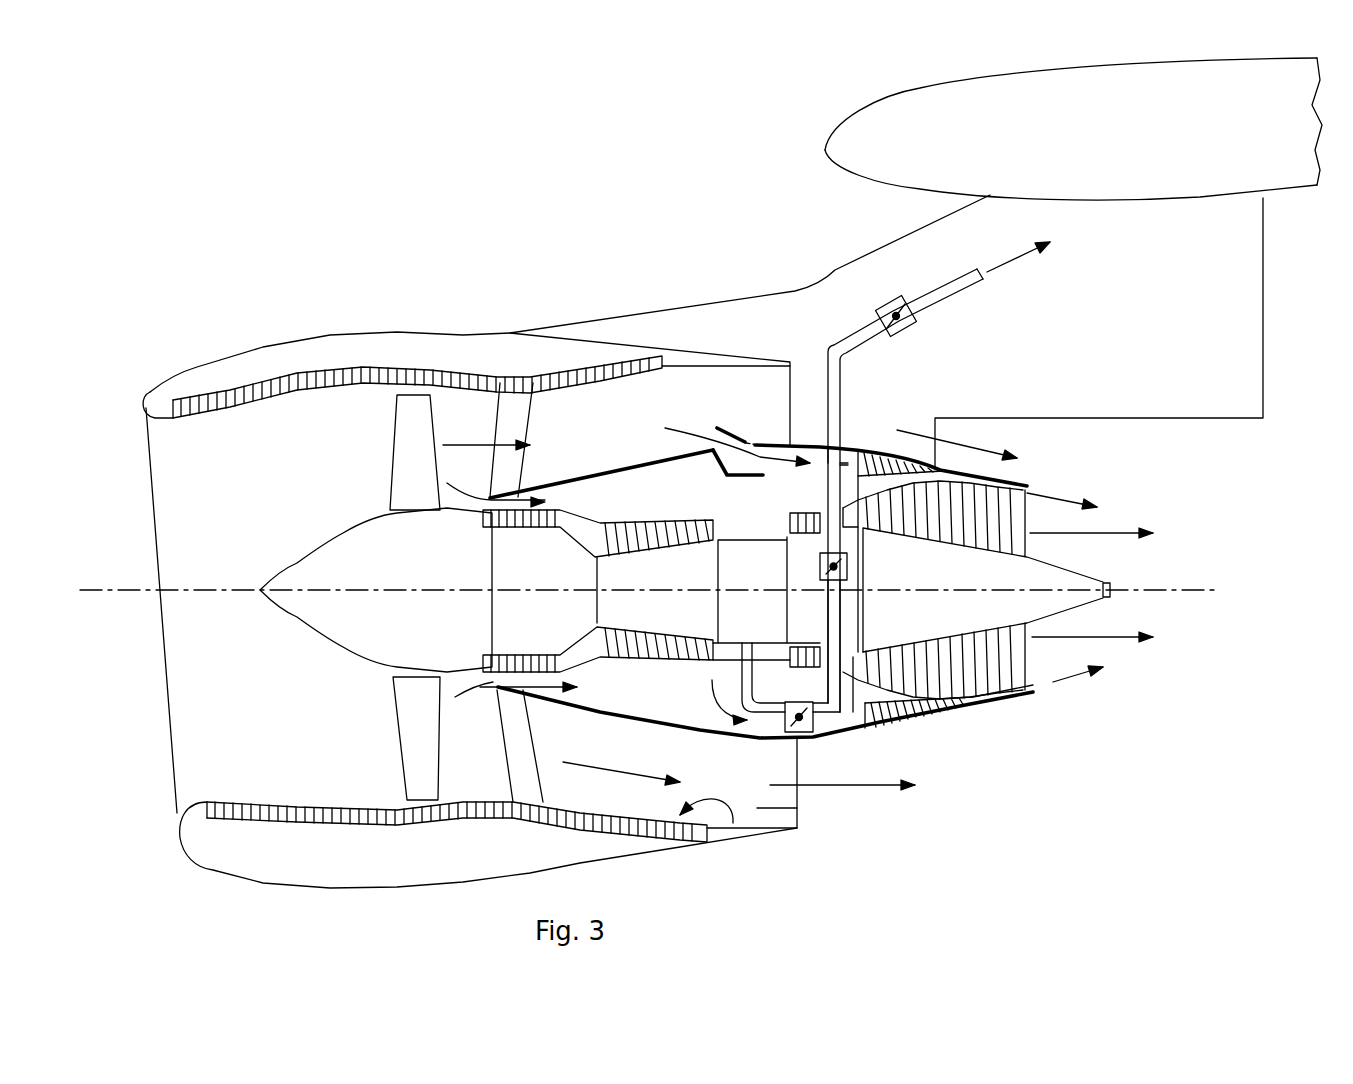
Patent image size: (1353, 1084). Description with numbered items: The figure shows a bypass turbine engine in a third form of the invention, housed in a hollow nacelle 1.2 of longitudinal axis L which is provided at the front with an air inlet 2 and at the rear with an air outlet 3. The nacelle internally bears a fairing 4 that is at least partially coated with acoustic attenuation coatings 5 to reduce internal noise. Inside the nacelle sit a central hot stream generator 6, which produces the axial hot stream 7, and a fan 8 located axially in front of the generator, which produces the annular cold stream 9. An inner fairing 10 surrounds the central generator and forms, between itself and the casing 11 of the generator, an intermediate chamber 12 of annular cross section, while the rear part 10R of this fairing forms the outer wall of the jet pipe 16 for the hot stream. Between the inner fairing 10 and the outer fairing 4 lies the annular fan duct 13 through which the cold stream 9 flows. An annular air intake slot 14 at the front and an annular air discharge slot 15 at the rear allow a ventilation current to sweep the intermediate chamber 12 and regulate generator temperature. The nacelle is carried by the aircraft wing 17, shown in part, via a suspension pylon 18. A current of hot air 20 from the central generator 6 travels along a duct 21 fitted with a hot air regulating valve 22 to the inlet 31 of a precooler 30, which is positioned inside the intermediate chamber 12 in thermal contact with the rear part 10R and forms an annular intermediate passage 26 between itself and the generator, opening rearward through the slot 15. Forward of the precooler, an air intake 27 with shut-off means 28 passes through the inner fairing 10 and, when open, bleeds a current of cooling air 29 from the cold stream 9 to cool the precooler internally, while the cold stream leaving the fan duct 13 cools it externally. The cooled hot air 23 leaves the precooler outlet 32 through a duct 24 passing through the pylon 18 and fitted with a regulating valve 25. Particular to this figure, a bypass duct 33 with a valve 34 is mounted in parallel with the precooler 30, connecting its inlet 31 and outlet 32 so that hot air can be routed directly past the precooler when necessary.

The nacelle 1.2 is at (396, 315).
The air inlet 2 is at (205, 658).
The air outlet 3 is at (797, 808).
The fairing 4 is at (733, 823).
The acoustic attenuation coatings 5 is at (323, 808).
The central hot stream generator 6 is at (651, 591).
The hot stream 7 is at (1100, 530).
The fan 8 is at (360, 563).
The cold stream 9 is at (470, 444).
The inner fairing 10 is at (588, 476).
The rear part of the inner fairing 10R is at (1007, 488).
The casing 11 is at (618, 658).
The intermediate chamber 12 is at (659, 493).
The fan duct 13 is at (716, 765).
The annular air intake slot 14 is at (490, 690).
The annular air discharge slot 15 is at (1033, 692).
The jet pipe 16 is at (993, 512).
The wing 17 is at (1278, 143).
The suspension pylon 18 is at (887, 275).
The current of hot air 20 is at (705, 712).
The duct 21 is at (766, 650).
The hot air regulating valve 22 is at (813, 735).
The cooled hot air 23 is at (1013, 262).
The duct 24 is at (857, 335).
The regulating valve 25 is at (905, 322).
The intermediate passage 26 is at (967, 703).
The air intake 27 is at (740, 470).
The shut-off means 28 is at (745, 440).
The current of cooling air 29 is at (782, 465).
The precooler 30 is at (870, 722).
The inlet 31 is at (863, 727).
The outlet 32 is at (838, 467).
The bypass duct 33 is at (835, 620).
The valve 34 is at (847, 568).
The longitudinal axis L is at (647, 572).